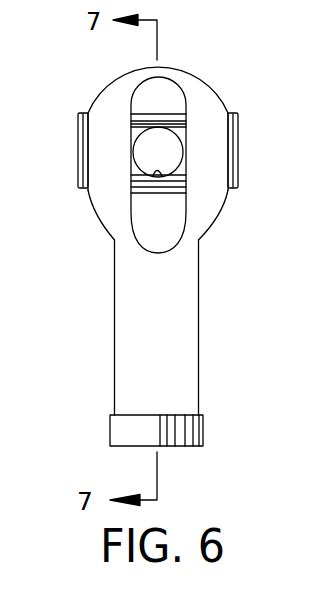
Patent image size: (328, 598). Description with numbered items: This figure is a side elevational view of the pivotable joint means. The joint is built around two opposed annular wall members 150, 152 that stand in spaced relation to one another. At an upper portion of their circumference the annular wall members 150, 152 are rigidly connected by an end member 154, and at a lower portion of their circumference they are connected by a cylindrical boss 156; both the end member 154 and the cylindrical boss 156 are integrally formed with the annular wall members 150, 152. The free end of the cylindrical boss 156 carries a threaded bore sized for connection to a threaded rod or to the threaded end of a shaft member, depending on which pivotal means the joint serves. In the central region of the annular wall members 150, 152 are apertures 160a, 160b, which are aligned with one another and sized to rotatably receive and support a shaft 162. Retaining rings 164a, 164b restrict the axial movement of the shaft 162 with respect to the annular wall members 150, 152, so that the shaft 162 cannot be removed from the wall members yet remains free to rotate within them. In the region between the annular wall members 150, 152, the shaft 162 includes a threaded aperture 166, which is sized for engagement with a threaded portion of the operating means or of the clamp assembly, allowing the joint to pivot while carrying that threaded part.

The annular wall member 150 is at (117, 89).
The annular wall member 152 is at (212, 92).
The end member 154 is at (165, 85).
The cylindrical boss 156 is at (180, 390).
The aperture 160a is at (84, 190).
The aperture 160b is at (229, 190).
The shaft 162 is at (174, 131).
The retaining ring 164a is at (88, 113).
The retaining ring 164b is at (236, 114).
The threaded aperture 166 is at (162, 176).